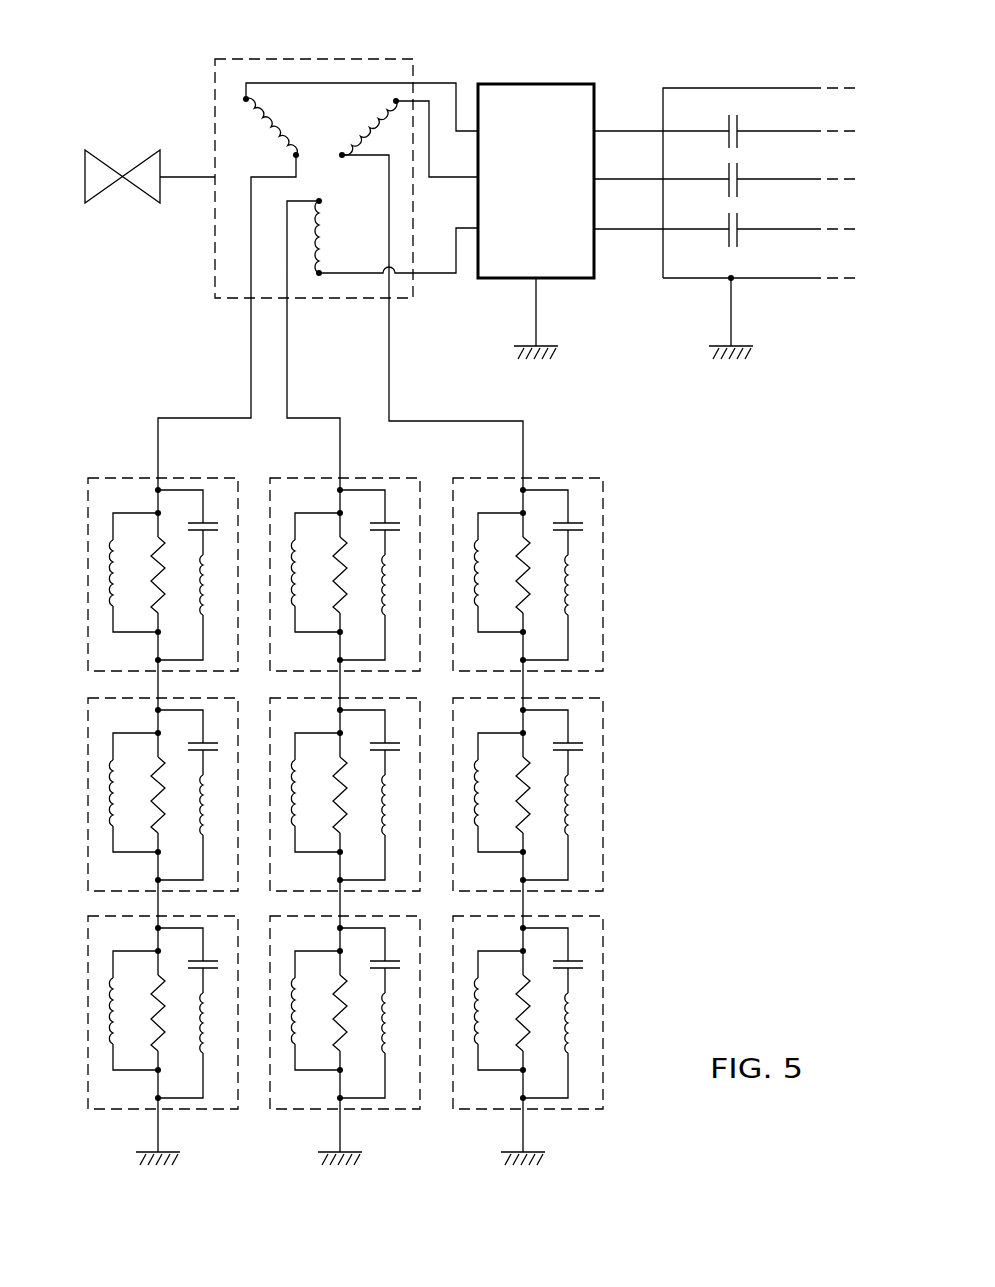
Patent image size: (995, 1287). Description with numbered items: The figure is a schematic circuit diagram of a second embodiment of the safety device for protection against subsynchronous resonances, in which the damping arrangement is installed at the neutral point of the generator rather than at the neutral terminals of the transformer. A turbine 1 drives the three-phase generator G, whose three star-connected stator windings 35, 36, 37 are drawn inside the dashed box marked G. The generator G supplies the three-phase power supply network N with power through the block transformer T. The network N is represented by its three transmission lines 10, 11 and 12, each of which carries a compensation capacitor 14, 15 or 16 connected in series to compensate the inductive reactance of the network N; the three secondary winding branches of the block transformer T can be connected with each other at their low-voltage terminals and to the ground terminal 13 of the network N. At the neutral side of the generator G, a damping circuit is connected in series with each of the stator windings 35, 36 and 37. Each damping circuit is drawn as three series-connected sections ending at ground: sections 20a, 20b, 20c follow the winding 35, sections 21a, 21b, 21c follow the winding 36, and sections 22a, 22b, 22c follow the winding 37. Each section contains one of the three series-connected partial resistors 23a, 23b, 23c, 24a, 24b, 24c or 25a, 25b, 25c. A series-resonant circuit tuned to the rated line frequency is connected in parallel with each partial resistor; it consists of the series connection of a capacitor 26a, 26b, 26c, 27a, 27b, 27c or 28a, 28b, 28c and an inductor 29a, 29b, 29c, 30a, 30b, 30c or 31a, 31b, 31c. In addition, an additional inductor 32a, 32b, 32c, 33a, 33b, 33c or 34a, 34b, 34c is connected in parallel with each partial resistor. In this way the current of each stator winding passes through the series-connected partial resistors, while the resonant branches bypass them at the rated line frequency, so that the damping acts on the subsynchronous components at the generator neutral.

The turbine 1 is at (128, 238).
The three-phase generator G is at (347, 56).
The block transformer T is at (536, 221).
The three-phase power supply network N is at (762, 87).
The transmission line 10 is at (795, 137).
The transmission line 11 is at (795, 185).
The transmission line 12 is at (795, 235).
The ground terminal 13 is at (737, 317).
The compensation capacitor 14 is at (665, 125).
The compensation capacitor 15 is at (665, 173).
The compensation capacitor 16 is at (665, 223).
The damping circuit section 20a is at (163, 574).
The damping circuit section 20b is at (163, 794).
The damping circuit section 20c is at (163, 1012).
The damping circuit section 21a is at (345, 574).
The damping circuit section 21b is at (345, 794).
The damping circuit section 21c is at (345, 1012).
The damping circuit section 22a is at (558, 574).
The damping circuit section 22b is at (559, 794).
The damping circuit section 22c is at (559, 1012).
The partial resistor 23a is at (144, 575).
The partial resistor 23b is at (144, 795).
The partial resistor 23c is at (144, 1013).
The partial resistor 24a is at (326, 575).
The partial resistor 24b is at (326, 795).
The partial resistor 24c is at (326, 1013).
The partial resistor 25a is at (509, 575).
The partial resistor 25b is at (509, 795).
The partial resistor 25c is at (509, 1013).
The capacitor 26a is at (188, 510).
The capacitor 26b is at (188, 730).
The capacitor 26c is at (188, 948).
The capacitor 27a is at (370, 510).
The capacitor 27b is at (370, 730).
The capacitor 27c is at (370, 948).
The capacitor 28a is at (553, 510).
The capacitor 28b is at (553, 730).
The capacitor 28c is at (553, 948).
The inductor 29a is at (180, 595).
The inductor 29b is at (180, 815).
The inductor 29c is at (180, 1033).
The inductor 30a is at (362, 595).
The inductor 30b is at (362, 815).
The inductor 30c is at (362, 1033).
The inductor 31a is at (545, 595).
The inductor 31b is at (545, 815).
The inductor 31c is at (545, 1033).
The additional inductor 32a is at (133, 572).
The additional inductor 32b is at (133, 792).
The additional inductor 32c is at (133, 1010).
The additional inductor 33a is at (315, 572).
The additional inductor 33b is at (315, 792).
The additional inductor 33c is at (315, 1010).
The additional inductor 34a is at (498, 572).
The additional inductor 34b is at (498, 792).
The additional inductor 34c is at (498, 1010).
The stator winding 35 is at (318, 286).
The stator winding 36 is at (382, 344).
The stator winding 37 is at (428, 291).